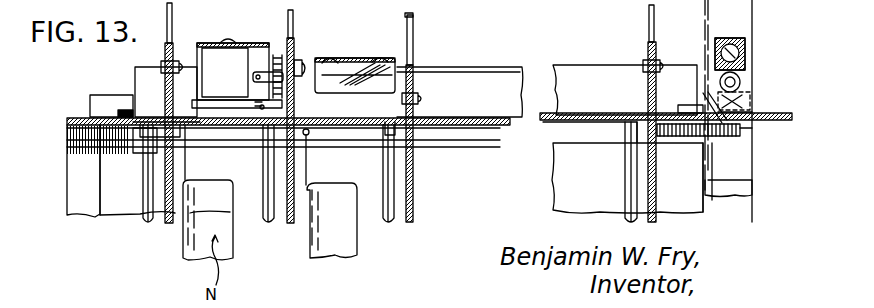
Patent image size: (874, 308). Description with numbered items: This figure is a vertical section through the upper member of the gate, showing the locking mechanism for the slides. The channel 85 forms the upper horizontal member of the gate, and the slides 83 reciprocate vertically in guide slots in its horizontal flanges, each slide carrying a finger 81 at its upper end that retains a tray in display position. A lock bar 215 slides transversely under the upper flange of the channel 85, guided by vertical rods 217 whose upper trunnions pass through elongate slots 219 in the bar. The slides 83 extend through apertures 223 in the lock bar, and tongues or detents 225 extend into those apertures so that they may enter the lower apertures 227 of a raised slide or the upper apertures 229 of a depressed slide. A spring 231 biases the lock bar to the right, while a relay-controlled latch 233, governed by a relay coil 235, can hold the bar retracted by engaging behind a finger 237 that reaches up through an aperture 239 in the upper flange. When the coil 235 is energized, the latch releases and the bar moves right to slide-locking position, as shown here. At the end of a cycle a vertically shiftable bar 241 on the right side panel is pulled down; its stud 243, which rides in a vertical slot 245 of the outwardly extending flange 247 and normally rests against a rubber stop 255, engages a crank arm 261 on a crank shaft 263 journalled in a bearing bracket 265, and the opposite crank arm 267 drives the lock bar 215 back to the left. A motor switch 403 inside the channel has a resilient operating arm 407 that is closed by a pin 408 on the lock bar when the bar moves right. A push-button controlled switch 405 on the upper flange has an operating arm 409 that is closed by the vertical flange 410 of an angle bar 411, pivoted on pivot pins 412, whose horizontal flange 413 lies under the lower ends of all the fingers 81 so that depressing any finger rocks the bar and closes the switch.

The finger 81 is at (172, 10).
The slide 83 is at (165, 178).
The channel 85 is at (72, 182).
The lock bar 215 is at (577, 138).
The rod 217 is at (146, 208).
The slot 219 is at (133, 136).
The aperture 223 is at (425, 125).
The detent 225 is at (420, 133).
The lower aperture 227 is at (293, 118).
The upper aperture 229 is at (167, 90).
The spring 231 is at (696, 138).
The latch 233 is at (241, 100).
The relay coil 235 is at (213, 57).
The finger 237 is at (203, 124).
The aperture 239 is at (187, 117).
The vertically shiftable bar 241 is at (731, 196).
The stud 243 is at (740, 78).
The slot 245 is at (754, 100).
The flange 247 is at (753, 10).
The rubber stop 255 is at (718, 62).
The crank arm 261 is at (746, 88).
The crank shaft 263 is at (706, 102).
The bearing bracket 265 is at (750, 110).
The crank arm 267 is at (726, 137).
The motor switch 403 is at (338, 190).
The push-button controlled switch 405 is at (358, 84).
The operating arm 407 is at (312, 163).
The pin 408 is at (309, 135).
The operating arm 409 is at (308, 72).
The vertical flange 410 is at (486, 77).
The angle bar 411 is at (607, 65).
The pivot pin 412 is at (122, 108).
The horizontal flange 413 is at (492, 113).